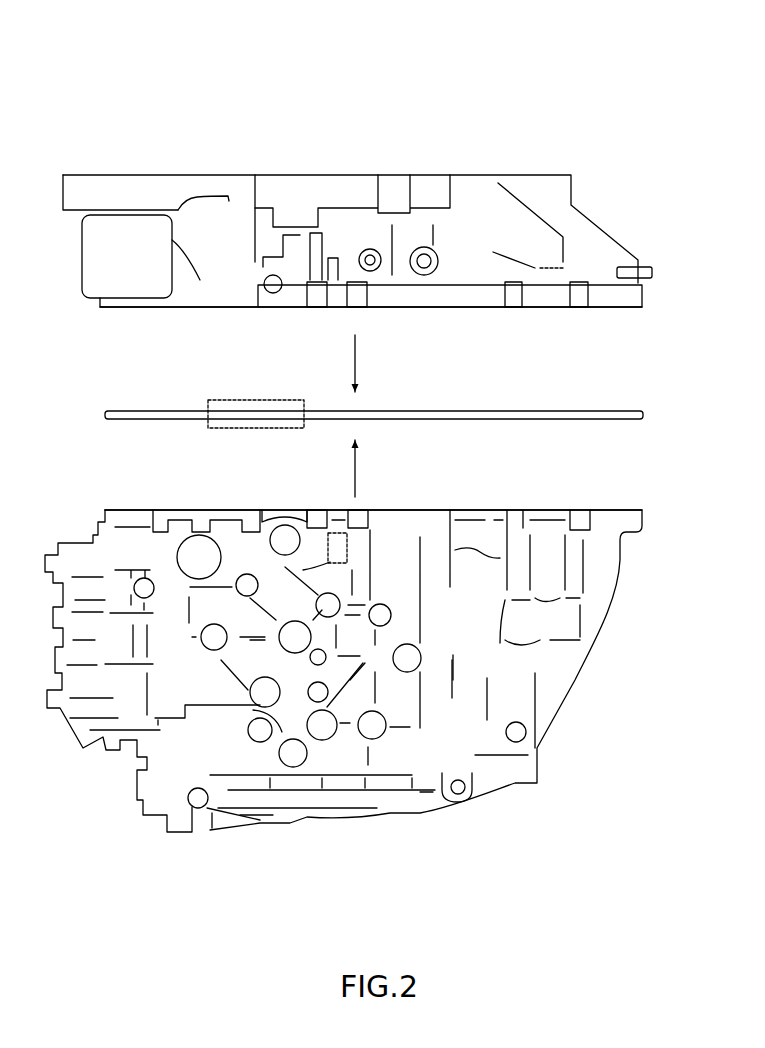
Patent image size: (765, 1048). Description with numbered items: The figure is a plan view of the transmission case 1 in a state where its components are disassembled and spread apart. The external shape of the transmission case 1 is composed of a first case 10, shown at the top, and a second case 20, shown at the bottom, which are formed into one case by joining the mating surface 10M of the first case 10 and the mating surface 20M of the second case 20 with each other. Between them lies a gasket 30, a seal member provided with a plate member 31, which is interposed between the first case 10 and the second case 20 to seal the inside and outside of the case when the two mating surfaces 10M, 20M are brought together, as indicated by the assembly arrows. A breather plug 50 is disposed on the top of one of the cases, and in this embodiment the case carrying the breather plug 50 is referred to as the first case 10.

The transmission case 1 is at (507, 118).
The first case 10 is at (628, 242).
The mating surface of the first case 10M is at (458, 307).
The breather plug 50 is at (273, 293).
The gasket 30 is at (587, 440).
The plate member 31 is at (268, 427).
The second case 20 is at (540, 765).
The mating surface of the second case 20M is at (432, 508).